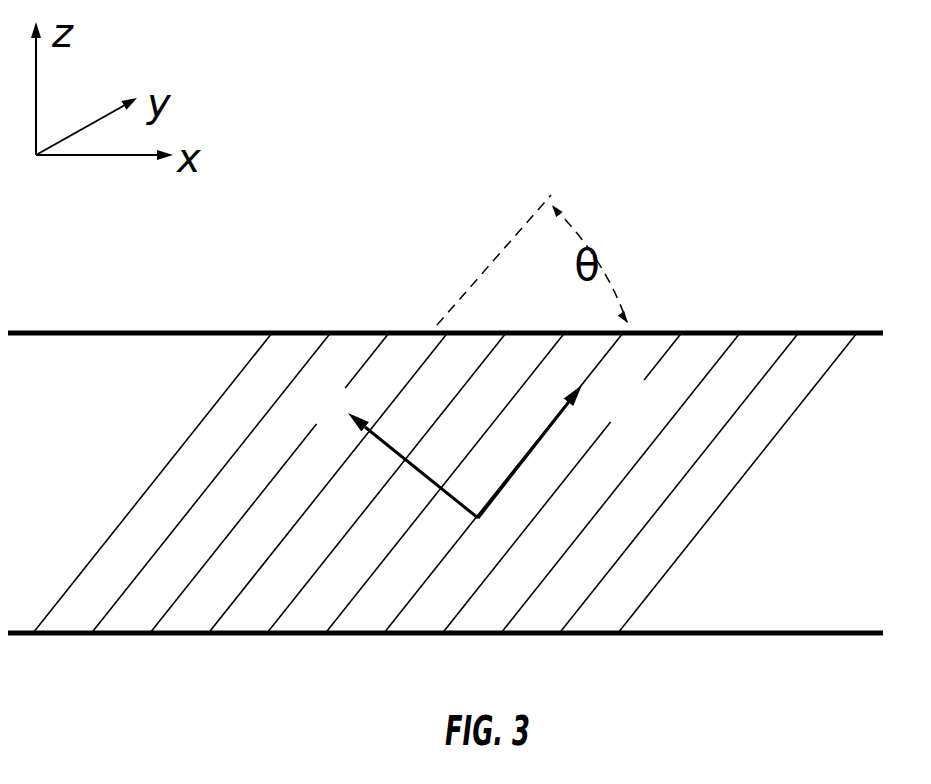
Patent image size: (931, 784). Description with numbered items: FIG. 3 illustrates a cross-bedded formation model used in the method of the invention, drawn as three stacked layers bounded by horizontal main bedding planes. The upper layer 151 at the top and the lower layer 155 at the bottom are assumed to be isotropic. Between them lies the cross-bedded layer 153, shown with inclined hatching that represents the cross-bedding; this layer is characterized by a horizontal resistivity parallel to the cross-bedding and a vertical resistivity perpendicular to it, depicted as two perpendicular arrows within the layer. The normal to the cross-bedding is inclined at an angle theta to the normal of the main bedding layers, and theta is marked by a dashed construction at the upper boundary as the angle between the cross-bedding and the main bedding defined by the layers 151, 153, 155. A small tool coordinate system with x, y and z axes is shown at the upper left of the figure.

The upper layer 151 is at (871, 259).
The cross-bedded layer 153 is at (871, 518).
The lower layer 155 is at (871, 719).